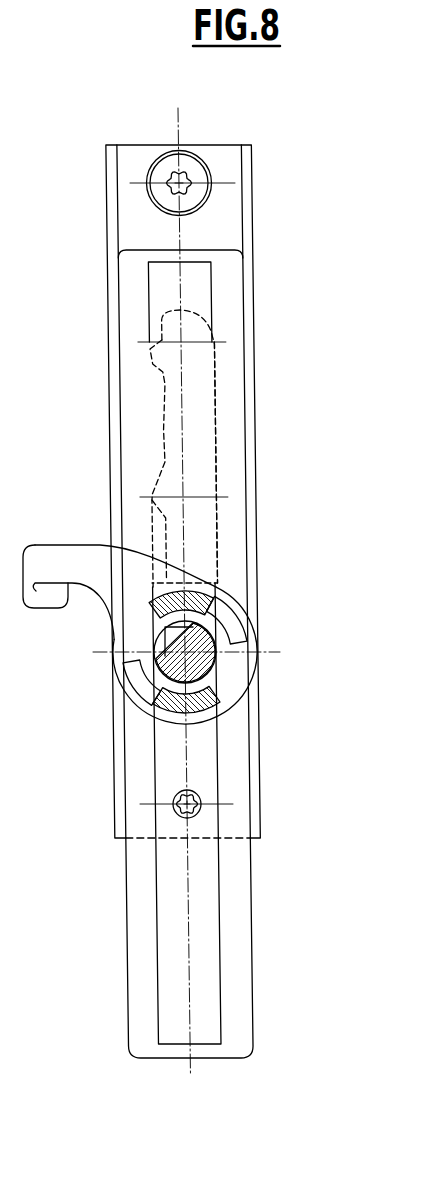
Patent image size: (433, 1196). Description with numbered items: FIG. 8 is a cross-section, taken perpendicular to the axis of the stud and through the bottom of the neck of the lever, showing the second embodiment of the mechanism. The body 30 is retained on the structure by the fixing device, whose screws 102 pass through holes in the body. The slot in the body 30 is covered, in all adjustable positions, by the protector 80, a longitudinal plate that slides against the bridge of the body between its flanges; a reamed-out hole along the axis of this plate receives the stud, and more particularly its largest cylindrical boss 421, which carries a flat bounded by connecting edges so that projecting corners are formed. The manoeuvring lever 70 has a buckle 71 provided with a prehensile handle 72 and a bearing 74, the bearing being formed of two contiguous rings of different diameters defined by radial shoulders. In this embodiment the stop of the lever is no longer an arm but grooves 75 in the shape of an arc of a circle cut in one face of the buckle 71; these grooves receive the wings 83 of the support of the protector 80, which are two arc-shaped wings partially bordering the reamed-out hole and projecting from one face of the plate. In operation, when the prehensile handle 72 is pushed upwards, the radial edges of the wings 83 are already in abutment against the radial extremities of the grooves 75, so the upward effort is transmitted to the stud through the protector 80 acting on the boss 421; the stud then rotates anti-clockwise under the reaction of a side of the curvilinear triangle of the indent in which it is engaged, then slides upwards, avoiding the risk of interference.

The body 30 is at (247, 200).
The screws 102 is at (184, 176).
The protector 80 is at (227, 388).
The manoeuvring lever 70 is at (183, 636).
The prehensile handle 72 is at (45, 553).
The buckle 71 is at (230, 687).
The bearing 74 is at (163, 633).
The cylindrical boss 421 is at (200, 663).
The grooves 75 is at (143, 679).
The support wings 83 is at (196, 601).